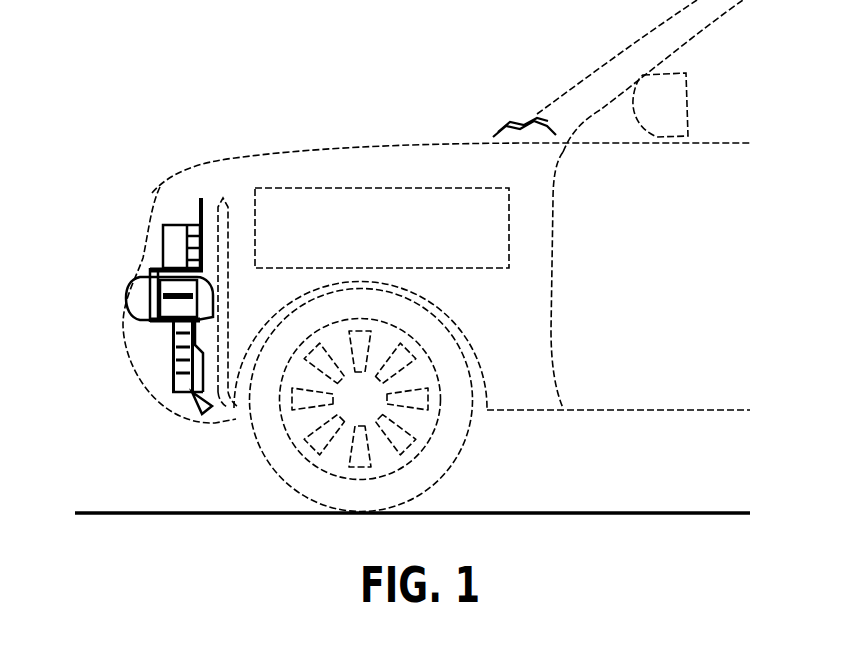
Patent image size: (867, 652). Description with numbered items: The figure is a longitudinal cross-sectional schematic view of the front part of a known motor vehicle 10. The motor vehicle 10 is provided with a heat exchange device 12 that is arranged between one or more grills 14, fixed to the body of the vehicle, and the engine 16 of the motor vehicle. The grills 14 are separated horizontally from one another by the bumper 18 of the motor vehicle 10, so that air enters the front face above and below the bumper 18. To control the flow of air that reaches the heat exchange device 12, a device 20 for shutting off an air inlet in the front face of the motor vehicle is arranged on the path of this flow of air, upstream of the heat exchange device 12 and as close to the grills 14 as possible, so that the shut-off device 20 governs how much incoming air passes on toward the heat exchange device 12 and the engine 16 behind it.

The motor vehicle 10 is at (524, 91).
The heat exchange device 12 is at (218, 200).
The grills 14 is at (147, 228).
The engine 16 is at (369, 243).
The bumper 18 is at (138, 298).
The device for shutting off an air inlet 20 is at (178, 237).